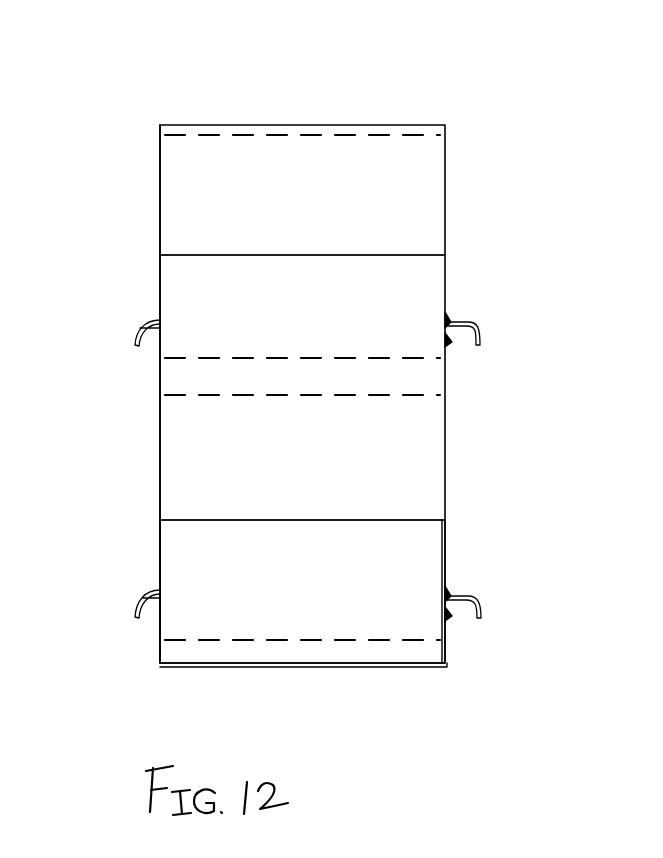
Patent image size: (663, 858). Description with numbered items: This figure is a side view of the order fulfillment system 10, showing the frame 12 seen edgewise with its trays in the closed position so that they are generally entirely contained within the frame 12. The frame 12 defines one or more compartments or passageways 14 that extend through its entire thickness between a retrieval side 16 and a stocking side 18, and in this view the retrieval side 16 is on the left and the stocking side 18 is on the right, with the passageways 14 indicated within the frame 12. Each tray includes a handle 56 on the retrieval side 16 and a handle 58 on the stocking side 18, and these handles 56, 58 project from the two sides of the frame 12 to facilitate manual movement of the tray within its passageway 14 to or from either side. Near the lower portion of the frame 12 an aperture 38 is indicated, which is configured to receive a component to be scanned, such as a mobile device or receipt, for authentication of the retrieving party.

The order fulfillment system 10 is at (518, 113).
The frame 12 is at (452, 187).
The passageway 14 is at (428, 482).
The retrieval side 16 is at (160, 235).
The stocking side 18 is at (445, 231).
The aperture 38 is at (425, 555).
The handle 56 is at (145, 598).
The handle 58 is at (470, 595).